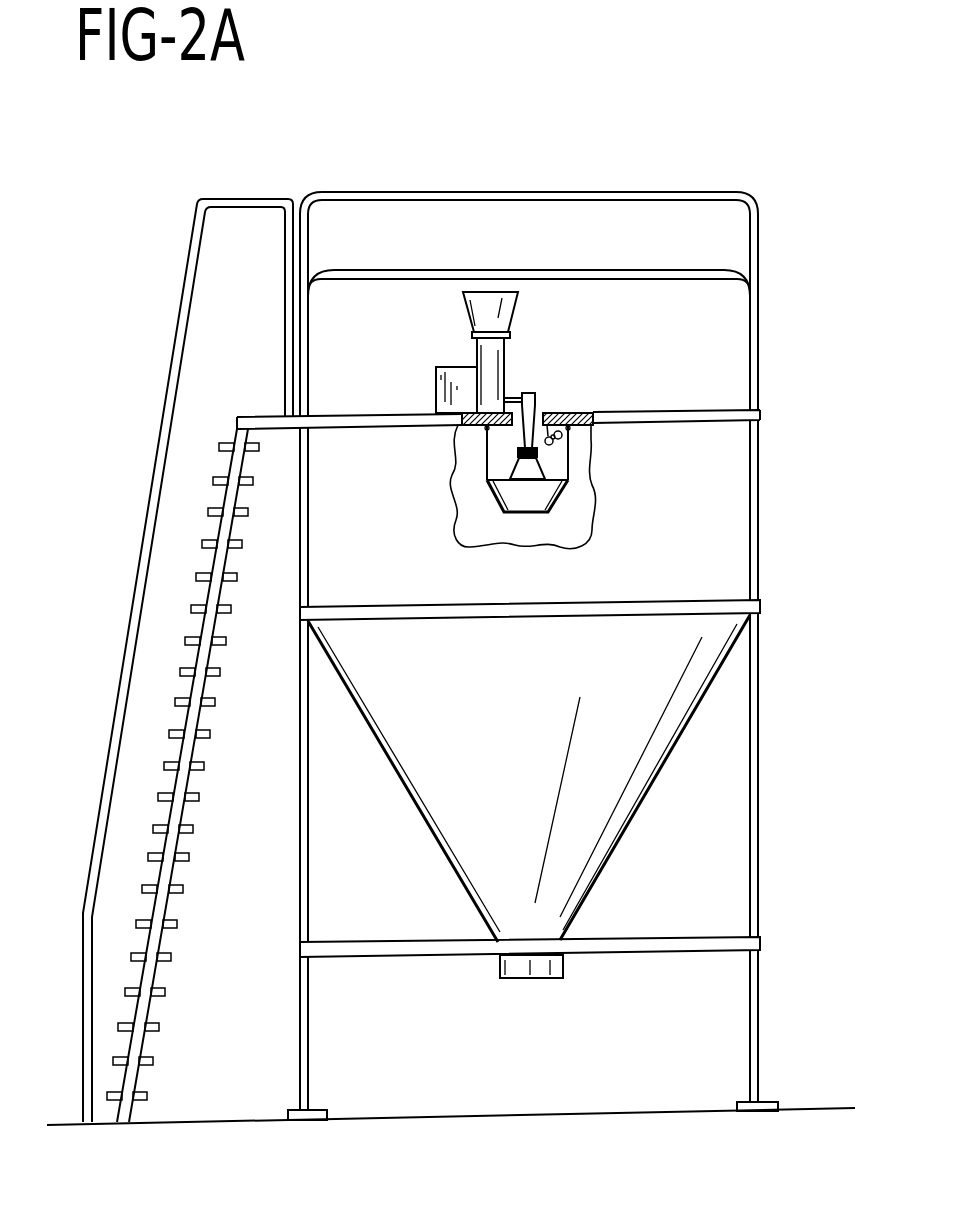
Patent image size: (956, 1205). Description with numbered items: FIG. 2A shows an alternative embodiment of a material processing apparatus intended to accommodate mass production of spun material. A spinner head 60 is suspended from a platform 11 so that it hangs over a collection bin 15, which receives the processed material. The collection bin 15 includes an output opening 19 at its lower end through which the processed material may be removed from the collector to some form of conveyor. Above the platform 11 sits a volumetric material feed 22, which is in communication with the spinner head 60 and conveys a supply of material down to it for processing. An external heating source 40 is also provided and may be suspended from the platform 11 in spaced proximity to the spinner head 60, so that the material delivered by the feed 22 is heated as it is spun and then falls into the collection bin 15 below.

The platform 11 is at (740, 414).
The collection bin 15 is at (705, 567).
The output opening 19 is at (530, 978).
The volumetric material feed 22 is at (504, 356).
The external heating source 40 is at (562, 440).
The spinner head 60 is at (537, 453).